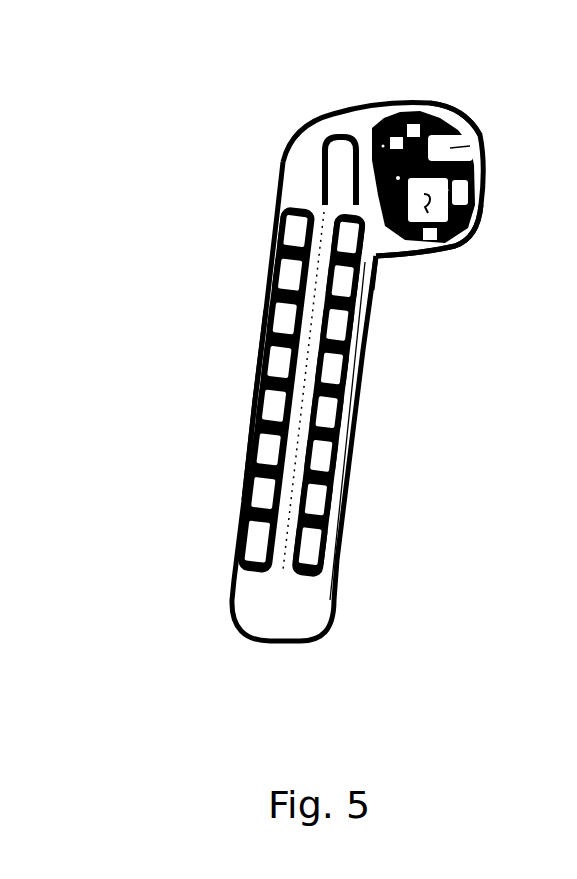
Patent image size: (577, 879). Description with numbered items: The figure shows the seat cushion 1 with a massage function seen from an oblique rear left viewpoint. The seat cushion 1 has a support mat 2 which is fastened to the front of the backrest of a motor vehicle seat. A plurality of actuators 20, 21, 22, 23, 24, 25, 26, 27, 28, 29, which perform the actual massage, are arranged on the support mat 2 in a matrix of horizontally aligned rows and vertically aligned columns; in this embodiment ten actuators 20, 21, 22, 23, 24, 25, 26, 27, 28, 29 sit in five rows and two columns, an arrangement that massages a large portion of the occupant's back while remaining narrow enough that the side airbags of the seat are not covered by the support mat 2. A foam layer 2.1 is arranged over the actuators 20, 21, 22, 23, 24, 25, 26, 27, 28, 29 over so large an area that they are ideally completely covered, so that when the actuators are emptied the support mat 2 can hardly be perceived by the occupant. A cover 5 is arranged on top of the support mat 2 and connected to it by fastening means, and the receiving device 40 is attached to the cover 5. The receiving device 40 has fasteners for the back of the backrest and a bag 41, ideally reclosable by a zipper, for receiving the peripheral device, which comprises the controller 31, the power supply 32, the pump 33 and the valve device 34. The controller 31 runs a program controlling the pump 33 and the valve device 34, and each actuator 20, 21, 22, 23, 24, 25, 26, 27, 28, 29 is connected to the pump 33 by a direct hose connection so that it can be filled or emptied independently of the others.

The seat cushion 1 is at (306, 328).
The support mat 2 is at (256, 340).
The foam layer 2.1 is at (258, 425).
The cover 5 is at (300, 118).
The actuator 20 is at (282, 234).
The actuator 21 is at (262, 316).
The actuator 22 is at (273, 399).
The actuator 23 is at (258, 479).
The actuator 24 is at (258, 565).
The actuator 25 is at (352, 202).
The actuator 26 is at (352, 309).
The actuator 27 is at (340, 393).
The actuator 28 is at (337, 476).
The actuator 29 is at (333, 549).
The controller 31 is at (420, 137).
The power supply 32 is at (462, 143).
The pump 33 is at (475, 230).
The valve device 34 is at (405, 247).
The receiving device 40 is at (478, 123).
The bag 41 is at (379, 238).